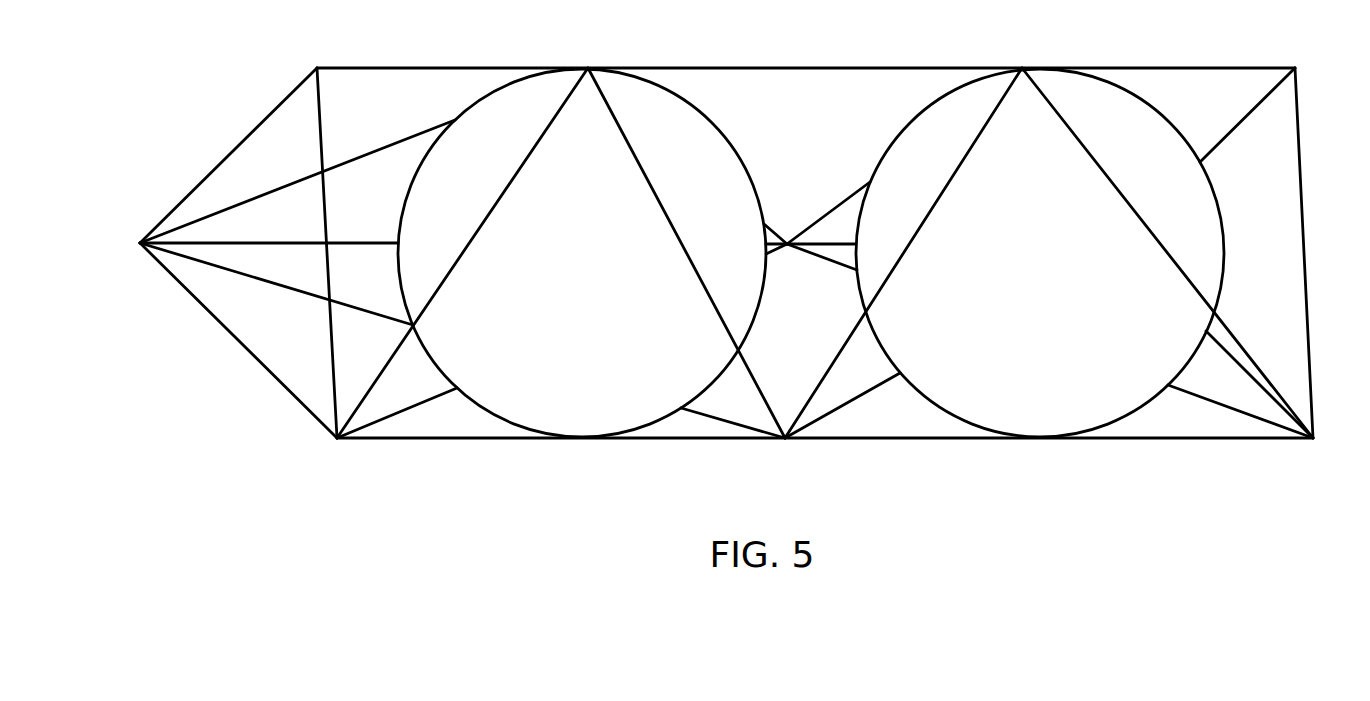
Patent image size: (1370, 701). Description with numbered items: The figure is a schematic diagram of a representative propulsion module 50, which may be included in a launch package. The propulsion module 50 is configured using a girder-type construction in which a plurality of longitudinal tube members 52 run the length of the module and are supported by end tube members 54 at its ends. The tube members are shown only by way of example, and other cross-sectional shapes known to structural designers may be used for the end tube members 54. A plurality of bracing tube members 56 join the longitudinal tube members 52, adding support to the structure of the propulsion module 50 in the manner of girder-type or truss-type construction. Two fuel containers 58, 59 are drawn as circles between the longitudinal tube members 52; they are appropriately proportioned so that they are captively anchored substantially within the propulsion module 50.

The propulsion module 50 is at (580, 530).
The longitudinal tube members 52 is at (470, 67).
The end tube members 54 is at (230, 150).
The bracing tube members 56 is at (310, 175).
The fuel container 58 is at (577, 432).
The fuel container 59 is at (1032, 436).